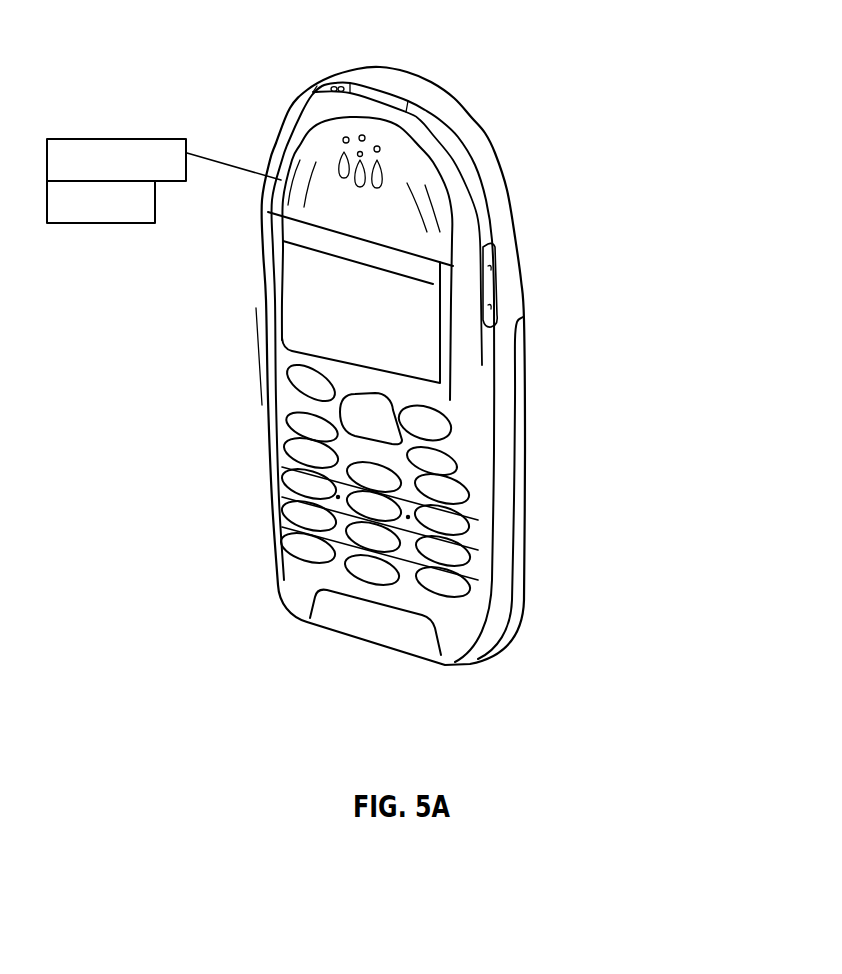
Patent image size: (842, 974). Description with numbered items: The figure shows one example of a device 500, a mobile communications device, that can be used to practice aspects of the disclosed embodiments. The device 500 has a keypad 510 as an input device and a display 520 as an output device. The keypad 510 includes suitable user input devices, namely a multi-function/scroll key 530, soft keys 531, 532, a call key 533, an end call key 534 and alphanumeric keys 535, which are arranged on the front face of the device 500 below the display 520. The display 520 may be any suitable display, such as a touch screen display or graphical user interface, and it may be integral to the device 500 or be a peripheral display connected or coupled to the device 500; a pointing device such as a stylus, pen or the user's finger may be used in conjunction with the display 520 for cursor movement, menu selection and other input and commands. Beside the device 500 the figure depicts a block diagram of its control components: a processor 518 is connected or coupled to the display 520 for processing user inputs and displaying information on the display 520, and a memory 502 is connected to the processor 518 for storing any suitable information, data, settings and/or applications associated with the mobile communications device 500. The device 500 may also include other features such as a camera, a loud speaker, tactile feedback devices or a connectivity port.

The device 500 is at (478, 78).
The memory 502 is at (89, 223).
The keypad 510 is at (457, 601).
The processor 518 is at (89, 139).
The display 520 is at (410, 337).
The multi-function/scroll key 530 is at (385, 420).
The soft key 531 is at (305, 385).
The soft key 532 is at (435, 423).
The call key 533 is at (310, 420).
The end call key 534 is at (433, 460).
The alphanumeric keys 535 is at (308, 545).